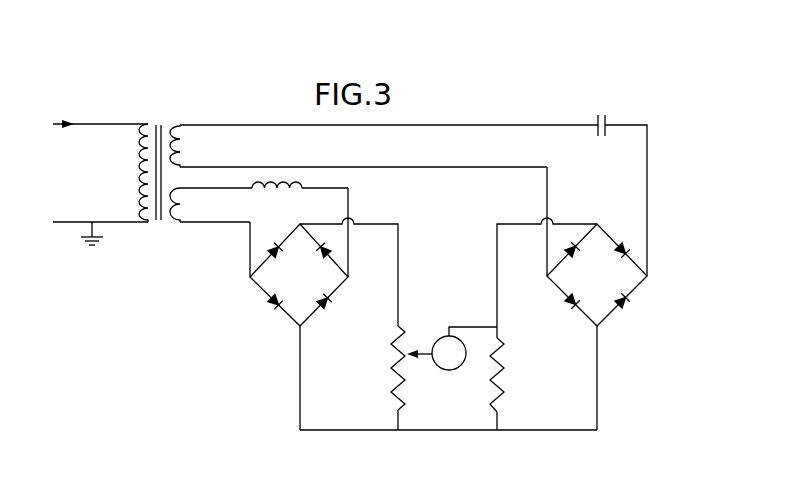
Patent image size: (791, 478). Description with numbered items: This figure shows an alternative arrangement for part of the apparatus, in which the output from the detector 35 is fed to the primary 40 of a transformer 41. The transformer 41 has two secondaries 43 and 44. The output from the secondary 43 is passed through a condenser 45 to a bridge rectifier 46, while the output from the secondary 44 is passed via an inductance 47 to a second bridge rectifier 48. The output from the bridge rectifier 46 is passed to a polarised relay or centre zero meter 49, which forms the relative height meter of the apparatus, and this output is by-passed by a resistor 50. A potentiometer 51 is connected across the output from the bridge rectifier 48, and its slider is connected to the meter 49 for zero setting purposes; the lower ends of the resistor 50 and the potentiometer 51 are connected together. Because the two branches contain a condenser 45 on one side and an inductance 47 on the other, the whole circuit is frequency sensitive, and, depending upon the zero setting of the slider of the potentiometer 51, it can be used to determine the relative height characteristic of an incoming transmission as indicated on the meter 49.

The detector 35 is at (100, 113).
The primary 40 is at (138, 165).
The transformer 41 is at (161, 125).
The secondary 43 is at (182, 152).
The secondary 44 is at (182, 212).
The condenser 45 is at (602, 113).
The bridge rectifier 46 is at (635, 295).
The inductance 47 is at (283, 192).
The bridge rectifier 48 is at (265, 292).
The centre zero meter 49 is at (453, 366).
The resistor 50 is at (503, 392).
The potentiometer 51 is at (392, 372).